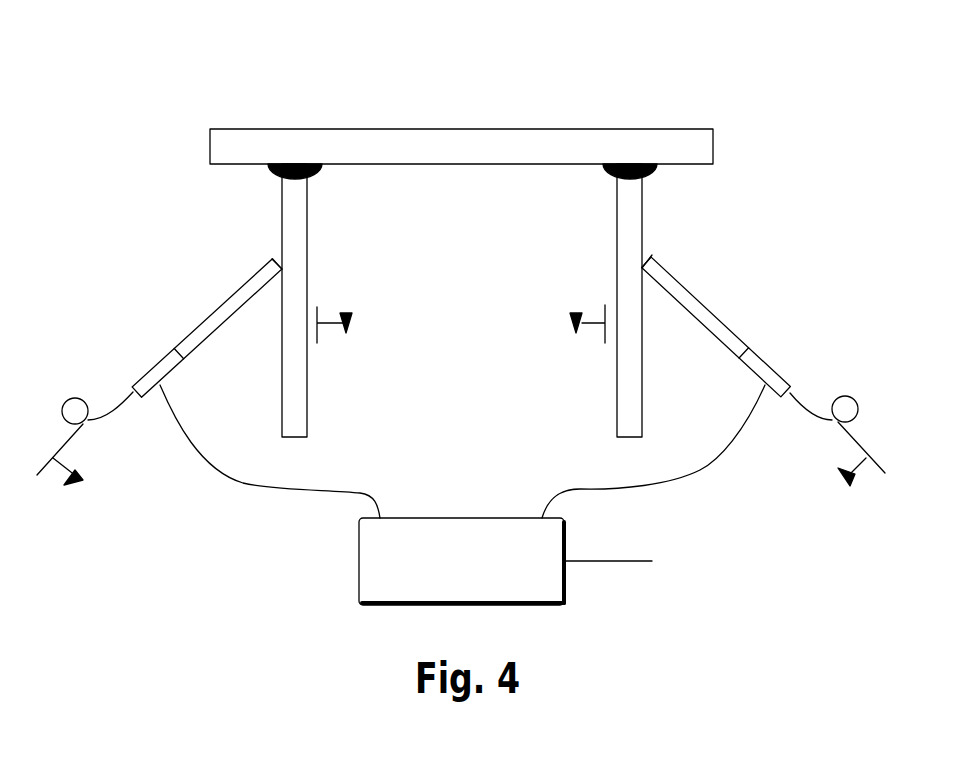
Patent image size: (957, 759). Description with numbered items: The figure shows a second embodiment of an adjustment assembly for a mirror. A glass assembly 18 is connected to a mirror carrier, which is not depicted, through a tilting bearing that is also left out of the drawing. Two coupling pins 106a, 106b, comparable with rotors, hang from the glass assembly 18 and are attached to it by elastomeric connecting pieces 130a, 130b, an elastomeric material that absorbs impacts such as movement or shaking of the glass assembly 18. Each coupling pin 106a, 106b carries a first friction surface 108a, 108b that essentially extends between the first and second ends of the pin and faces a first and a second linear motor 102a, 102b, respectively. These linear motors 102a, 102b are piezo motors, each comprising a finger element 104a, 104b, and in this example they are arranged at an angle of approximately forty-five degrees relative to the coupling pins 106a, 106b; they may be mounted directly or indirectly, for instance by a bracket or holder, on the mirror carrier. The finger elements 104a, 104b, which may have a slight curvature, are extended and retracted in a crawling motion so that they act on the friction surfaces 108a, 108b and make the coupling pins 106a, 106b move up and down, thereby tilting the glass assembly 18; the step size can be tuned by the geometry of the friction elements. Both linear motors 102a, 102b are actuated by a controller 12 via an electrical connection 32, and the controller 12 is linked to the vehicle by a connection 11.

The glass assembly 18 is at (687, 148).
The elastomeric connecting piece 130a is at (294, 165).
The elastomeric connecting piece 130b is at (633, 164).
The first coupling pin 106a is at (310, 392).
The second coupling pin 106b is at (617, 398).
The finger element 104a is at (268, 253).
The finger element 104b is at (655, 253).
The first linear motor 102a is at (182, 327).
The second linear motor 102b is at (733, 308).
The first friction surface 108a is at (282, 337).
The first friction surface 108b is at (642, 337).
The electrical connection 32 is at (243, 483).
The controller 12 is at (467, 518).
The connection to the vehicle 11 is at (615, 562).